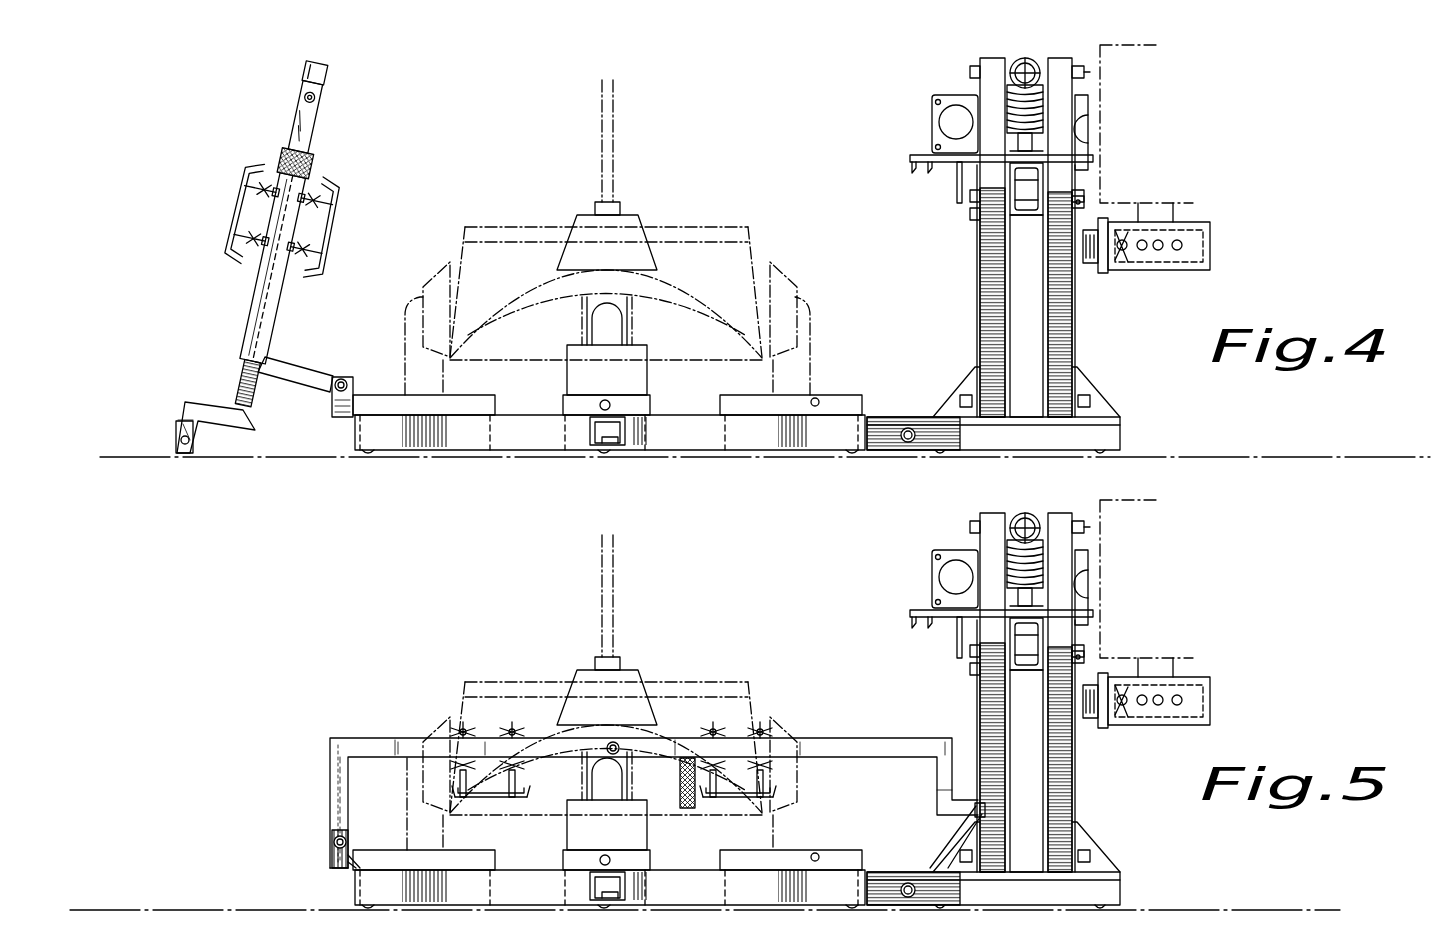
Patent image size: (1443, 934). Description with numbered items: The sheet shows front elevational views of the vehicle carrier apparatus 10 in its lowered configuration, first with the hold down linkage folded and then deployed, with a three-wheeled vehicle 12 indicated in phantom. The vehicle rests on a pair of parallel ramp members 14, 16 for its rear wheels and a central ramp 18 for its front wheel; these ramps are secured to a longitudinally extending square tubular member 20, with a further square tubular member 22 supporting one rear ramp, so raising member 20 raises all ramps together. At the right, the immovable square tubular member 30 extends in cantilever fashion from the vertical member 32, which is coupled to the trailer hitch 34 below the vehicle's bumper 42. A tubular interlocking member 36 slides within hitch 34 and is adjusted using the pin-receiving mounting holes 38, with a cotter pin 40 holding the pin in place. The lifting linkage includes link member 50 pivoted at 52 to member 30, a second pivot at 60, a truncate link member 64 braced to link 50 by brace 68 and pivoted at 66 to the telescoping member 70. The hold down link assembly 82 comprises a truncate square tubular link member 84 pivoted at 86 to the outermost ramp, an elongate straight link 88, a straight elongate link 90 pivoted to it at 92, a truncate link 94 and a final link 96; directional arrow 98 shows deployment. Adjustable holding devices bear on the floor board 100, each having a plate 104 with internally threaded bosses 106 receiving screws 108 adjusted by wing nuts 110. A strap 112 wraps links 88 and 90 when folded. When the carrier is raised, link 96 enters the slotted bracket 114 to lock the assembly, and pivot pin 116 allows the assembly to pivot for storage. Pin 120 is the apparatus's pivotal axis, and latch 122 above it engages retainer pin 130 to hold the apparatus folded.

In FIG. 4, the apparatus 10 is at (243, 105).
In FIG. 5, the apparatus 10 is at (357, 650).
In FIG. 4, the three-wheeled vehicle 12 is at (613, 130).
In FIG. 5, the three-wheeled vehicle 12 is at (612, 588).
In FIG. 4, the ramp member 14 is at (423, 405).
In FIG. 5, the ramp member 14 is at (395, 860).
In FIG. 4, the ramp member 16 is at (778, 405).
In FIG. 5, the ramp member 16 is at (850, 856).
In FIG. 4, the central ramp 18 is at (637, 410).
In FIG. 5, the central ramp 18 is at (590, 855).
In FIG. 4, the square tubular member 20 is at (530, 440).
In FIG. 5, the square tubular member 20 is at (520, 880).
In FIG. 4, the square tubular member 22 is at (592, 433).
In FIG. 5, the square tubular member 22 is at (588, 890).
In FIG. 4, the immovable square tubular member 30 is at (1020, 215).
In FIG. 5, the immovable square tubular member 30 is at (1020, 670).
In FIG. 4, the vertical member 32 is at (1020, 290).
In FIG. 5, the vertical member 32 is at (1012, 740).
In FIG. 4, the trailer hitch 34 is at (1212, 255).
In FIG. 5, the trailer hitch 34 is at (1213, 703).
In FIG. 4, the tubular interlocking member 36 is at (1100, 275).
In FIG. 5, the tubular interlocking member 36 is at (1100, 720).
In FIG. 4, the pin-receiving mounting holes 38 is at (1178, 242).
In FIG. 5, the pin-receiving mounting holes 38 is at (1180, 700).
In FIG. 4, the cotter pin 40 is at (1128, 262).
In FIG. 5, the cotter pin 40 is at (1128, 717).
In FIG. 4, the vehicle's bumper 42 is at (1100, 170).
In FIG. 5, the vehicle's bumper 42 is at (1100, 505).
In FIG. 4, the link member 50 is at (1068, 340).
In FIG. 5, the link member 50 is at (1068, 800).
In FIG. 4, the pivot point 52 is at (1085, 203).
In FIG. 5, the pivot point 52 is at (1085, 658).
In FIG. 5, the pivot point 60 is at (1083, 628).
In FIG. 4, the truncate link member 64 is at (1060, 130).
In FIG. 5, the truncate link member 64 is at (1060, 585).
In FIG. 4, the pivot point 66 is at (1085, 73).
In FIG. 5, the pivot point 66 is at (1085, 530).
In FIG. 4, the brace 68 is at (980, 285).
In FIG. 5, the brace 68 is at (1072, 775).
In FIG. 4, the telescoping member 70 is at (1005, 110).
In FIG. 5, the telescoping member 70 is at (1050, 553).
In FIG. 4, the link assembly 82 is at (272, 157).
In FIG. 5, the link assembly 82 is at (557, 744).
In FIG. 4, the truncate square tubular link member 84 is at (303, 385).
In FIG. 5, the truncate square tubular link member 84 is at (332, 775).
In FIG. 4, the pivot 86 is at (345, 378).
In FIG. 5, the pivot 86 is at (335, 843).
In FIG. 4, the elongate straight link 88 is at (255, 312).
In FIG. 5, the elongate straight link 88 is at (400, 740).
In FIG. 4, the straight elongate link 90 is at (283, 330).
In FIG. 5, the straight elongate link 90 is at (890, 740).
In FIG. 4, the pivot 92 is at (322, 100).
In FIG. 5, the pivot 92 is at (617, 742).
In FIG. 4, the truncate link 94 is at (210, 405).
In FIG. 5, the truncate link 94 is at (940, 772).
In FIG. 4, the final link 96 is at (180, 430).
In FIG. 5, the final link 96 is at (962, 815).
In FIG. 5, the directional arrow 98 is at (855, 732).
In FIG. 5, the floor board 100 is at (553, 800).
In FIG. 4, the plate 104 is at (345, 225).
In FIG. 5, the plate 104 is at (723, 802).
In FIG. 5, the internally threaded bosses 106 is at (775, 793).
In FIG. 5, the screws 108 is at (770, 765).
In FIG. 4, the wing nuts 110 is at (240, 232).
In FIG. 5, the wing nuts 110 is at (760, 725).
In FIG. 4, the strap 112 is at (305, 165).
In FIG. 5, the strap 112 is at (678, 780).
In FIG. 4, the bracket 114 is at (958, 190).
In FIG. 5, the bracket 114 is at (958, 648).
In FIG. 4, the pivot pin 116 is at (187, 455).
In FIG. 4, the pin 120 is at (905, 440).
In FIG. 5, the pin 120 is at (866, 884).
In FIG. 4, the latch 122 is at (912, 160).
In FIG. 5, the latch 122 is at (912, 612).
In FIG. 4, the retainer pin 130 is at (818, 398).
In FIG. 5, the retainer pin 130 is at (820, 860).